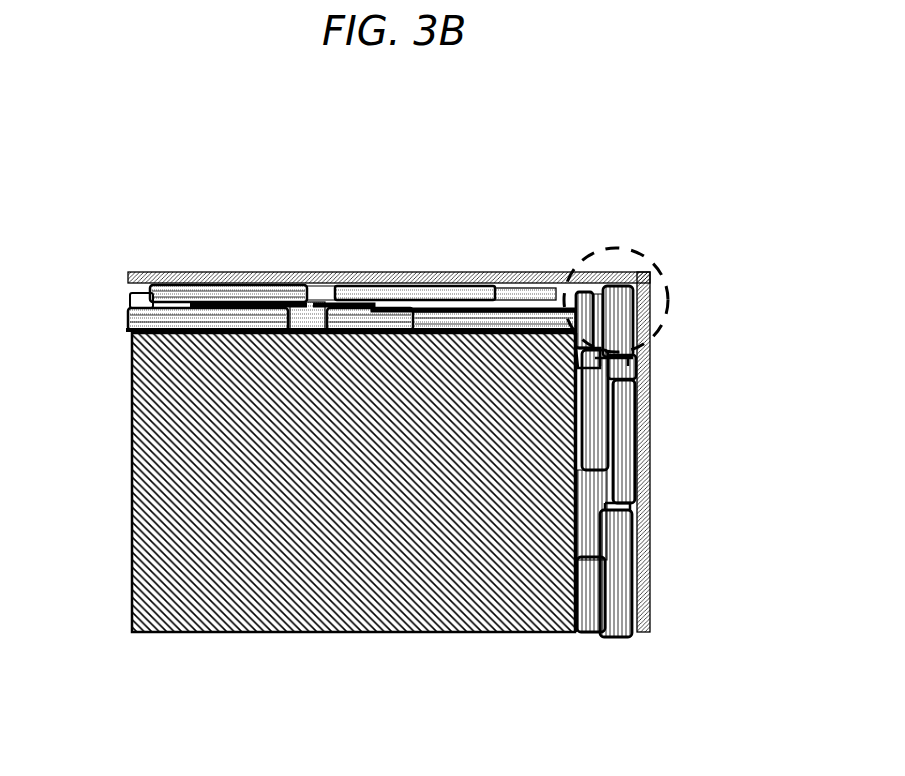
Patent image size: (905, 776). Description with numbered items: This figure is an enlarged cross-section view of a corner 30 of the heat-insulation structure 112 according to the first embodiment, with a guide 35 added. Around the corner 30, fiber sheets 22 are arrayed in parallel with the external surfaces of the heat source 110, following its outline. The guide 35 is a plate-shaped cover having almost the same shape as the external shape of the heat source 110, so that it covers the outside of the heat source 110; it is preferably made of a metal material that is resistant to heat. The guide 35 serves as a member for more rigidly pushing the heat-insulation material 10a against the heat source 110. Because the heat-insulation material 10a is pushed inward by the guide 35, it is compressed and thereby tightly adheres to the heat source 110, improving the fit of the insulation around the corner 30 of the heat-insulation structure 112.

The heat-insulation structure 112 is at (128, 95).
The fiber sheets 22 is at (400, 292).
The corner 30 is at (635, 253).
The guide 35 is at (650, 498).
The heat source 110 is at (405, 568).
The heat-insulation material 10a is at (578, 652).